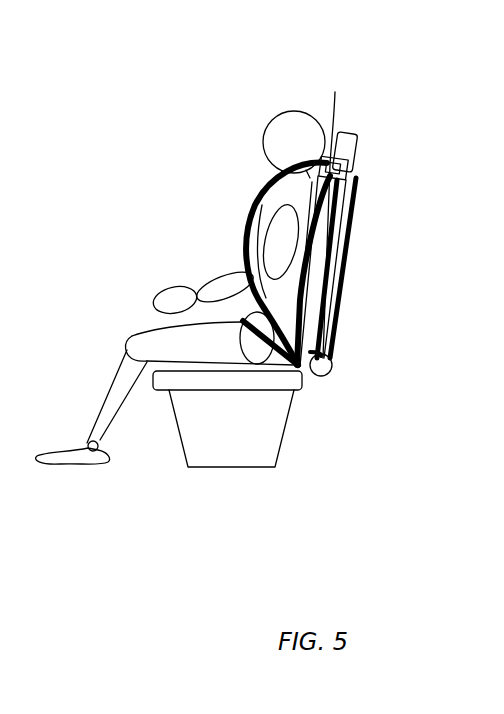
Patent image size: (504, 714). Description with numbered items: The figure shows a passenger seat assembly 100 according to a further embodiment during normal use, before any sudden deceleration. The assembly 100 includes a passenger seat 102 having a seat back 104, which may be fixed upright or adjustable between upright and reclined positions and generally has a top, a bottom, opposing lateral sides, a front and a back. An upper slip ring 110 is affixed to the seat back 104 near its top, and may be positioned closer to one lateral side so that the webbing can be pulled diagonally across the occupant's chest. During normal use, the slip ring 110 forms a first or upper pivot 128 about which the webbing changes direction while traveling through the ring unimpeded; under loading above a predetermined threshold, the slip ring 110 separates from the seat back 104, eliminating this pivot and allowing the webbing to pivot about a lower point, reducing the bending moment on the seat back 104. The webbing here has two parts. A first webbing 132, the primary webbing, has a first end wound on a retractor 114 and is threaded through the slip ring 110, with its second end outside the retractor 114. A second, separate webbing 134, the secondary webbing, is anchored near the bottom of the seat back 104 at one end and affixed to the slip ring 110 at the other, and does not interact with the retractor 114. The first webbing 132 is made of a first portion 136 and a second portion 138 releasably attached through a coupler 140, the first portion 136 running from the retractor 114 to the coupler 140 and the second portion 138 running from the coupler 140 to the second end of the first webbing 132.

The passenger seat assembly 100 is at (175, 108).
The passenger seat 102 is at (171, 479).
The seat back 104 is at (357, 150).
The upper slip ring 110 is at (323, 214).
The retractor 114 is at (330, 376).
The first or upper pivot 128 is at (361, 170).
The first webbing 132 is at (253, 205).
The second webbing 134 is at (325, 349).
The first portion 136 is at (345, 262).
The second portion 138 is at (250, 248).
The coupler 140 is at (352, 211).